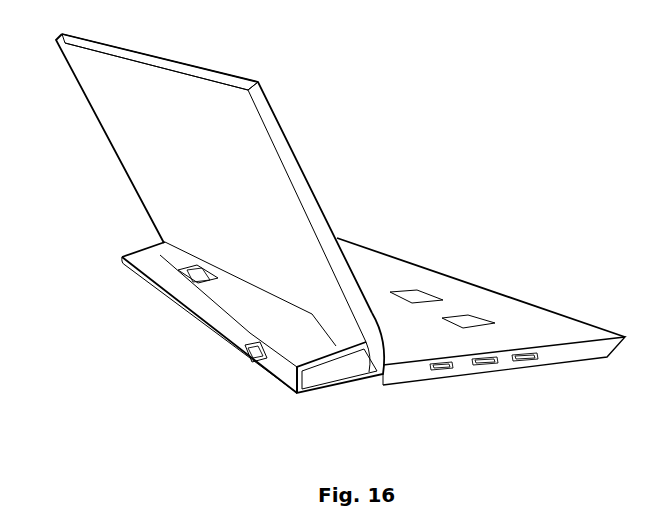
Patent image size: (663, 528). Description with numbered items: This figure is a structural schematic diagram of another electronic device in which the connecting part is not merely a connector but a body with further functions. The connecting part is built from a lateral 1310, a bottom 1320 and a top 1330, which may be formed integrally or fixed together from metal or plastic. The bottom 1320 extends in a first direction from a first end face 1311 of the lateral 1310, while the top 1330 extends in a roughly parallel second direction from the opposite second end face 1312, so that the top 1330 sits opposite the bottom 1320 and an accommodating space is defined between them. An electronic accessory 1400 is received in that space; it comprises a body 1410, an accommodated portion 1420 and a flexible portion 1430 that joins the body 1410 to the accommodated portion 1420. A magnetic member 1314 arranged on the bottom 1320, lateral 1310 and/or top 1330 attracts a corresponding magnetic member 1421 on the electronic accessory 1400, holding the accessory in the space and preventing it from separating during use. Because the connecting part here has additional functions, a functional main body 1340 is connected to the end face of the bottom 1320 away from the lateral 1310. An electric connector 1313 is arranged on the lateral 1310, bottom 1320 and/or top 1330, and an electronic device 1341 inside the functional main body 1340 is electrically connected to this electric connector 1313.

The electronic accessory 1400 is at (473, 109).
The body 1410 is at (313, 199).
The accommodated portion 1420 is at (337, 240).
The flexible portion 1430 is at (374, 256).
The magnetic member 1421 is at (178, 270).
The lateral 1310 is at (160, 281).
The first end face 1311 is at (298, 393).
The second end face 1312 is at (280, 372).
The electric connector 1313 is at (250, 352).
The magnetic member 1314 is at (153, 243).
The bottom 1320 is at (332, 389).
The top 1330 is at (253, 300).
The functional main body 1340 is at (448, 342).
The electronic device 1341 is at (410, 302).